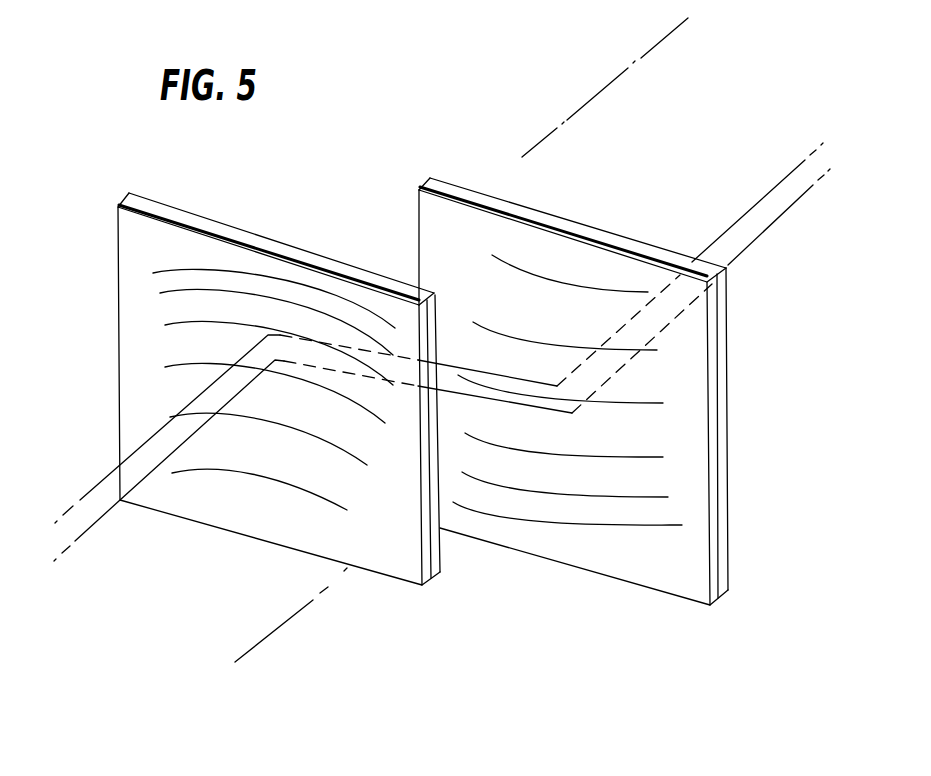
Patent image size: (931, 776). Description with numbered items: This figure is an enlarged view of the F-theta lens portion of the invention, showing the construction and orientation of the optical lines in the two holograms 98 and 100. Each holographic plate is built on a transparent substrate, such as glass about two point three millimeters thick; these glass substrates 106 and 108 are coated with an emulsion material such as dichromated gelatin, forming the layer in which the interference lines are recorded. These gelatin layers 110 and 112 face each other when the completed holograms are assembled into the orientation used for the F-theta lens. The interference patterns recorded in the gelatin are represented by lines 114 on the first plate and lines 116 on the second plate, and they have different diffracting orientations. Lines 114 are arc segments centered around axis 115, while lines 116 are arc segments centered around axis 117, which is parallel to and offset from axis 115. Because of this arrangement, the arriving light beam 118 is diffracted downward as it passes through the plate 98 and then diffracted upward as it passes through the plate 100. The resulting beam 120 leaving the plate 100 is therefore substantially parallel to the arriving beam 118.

The hologram 98 is at (118, 200).
The hologram 100 is at (421, 182).
The glass substrate 106 is at (423, 586).
The glass substrate 108 is at (725, 523).
The gelatin layer 110 is at (273, 240).
The gelatin layer 112 is at (559, 228).
The lines 114 is at (200, 345).
The lines 116 is at (604, 497).
The axis 115 is at (258, 643).
The axis 117 is at (586, 104).
The light beam 118 is at (83, 498).
The beam 120 is at (745, 210).